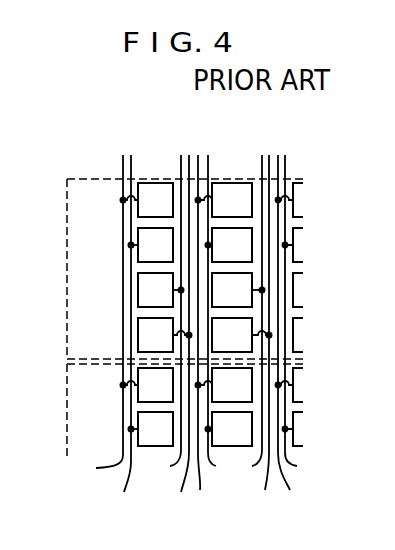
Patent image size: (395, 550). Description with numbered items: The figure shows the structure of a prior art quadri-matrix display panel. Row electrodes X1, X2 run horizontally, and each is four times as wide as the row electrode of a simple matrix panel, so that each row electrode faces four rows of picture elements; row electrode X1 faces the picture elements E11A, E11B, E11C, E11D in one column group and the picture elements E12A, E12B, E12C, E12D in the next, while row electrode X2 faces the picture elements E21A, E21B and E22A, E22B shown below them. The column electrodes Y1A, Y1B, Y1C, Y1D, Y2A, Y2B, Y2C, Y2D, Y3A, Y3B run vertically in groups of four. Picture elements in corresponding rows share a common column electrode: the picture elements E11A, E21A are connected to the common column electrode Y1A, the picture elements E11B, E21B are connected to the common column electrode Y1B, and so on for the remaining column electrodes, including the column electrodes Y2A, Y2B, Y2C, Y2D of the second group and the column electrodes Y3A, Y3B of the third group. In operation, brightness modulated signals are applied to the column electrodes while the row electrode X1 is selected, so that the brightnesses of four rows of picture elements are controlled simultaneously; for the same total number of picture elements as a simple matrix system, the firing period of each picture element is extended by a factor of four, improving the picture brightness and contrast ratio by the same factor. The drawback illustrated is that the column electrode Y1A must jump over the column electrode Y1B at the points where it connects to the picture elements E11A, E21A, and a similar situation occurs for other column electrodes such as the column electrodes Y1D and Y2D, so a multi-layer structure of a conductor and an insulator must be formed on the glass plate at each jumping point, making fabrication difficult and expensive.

The row electrode X1 is at (67, 301).
The row electrode X2 is at (67, 432).
The column electrode Y1A is at (97, 323).
The column electrode Y1B is at (120, 336).
The column electrode Y1C is at (167, 323).
The column electrode Y1D is at (174, 336).
The column electrode Y2A is at (208, 336).
The column electrode Y2B is at (225, 323).
The column electrode Y2C is at (258, 323).
The column electrode Y2D is at (261, 336).
The column electrode Y3A is at (298, 336).
The column electrode Y3B is at (305, 323).
The picture element E11A is at (147, 200).
The picture element E11B is at (151, 245).
The picture element E11C is at (161, 290).
The picture element E11D is at (165, 335).
The picture element E12A is at (224, 200).
The picture element E12B is at (229, 245).
The picture element E12C is at (238, 290).
The picture element E12D is at (242, 335).
The picture element E21A is at (147, 385).
The picture element E21B is at (151, 429).
The picture element E22A is at (224, 385).
The picture element E22B is at (229, 429).